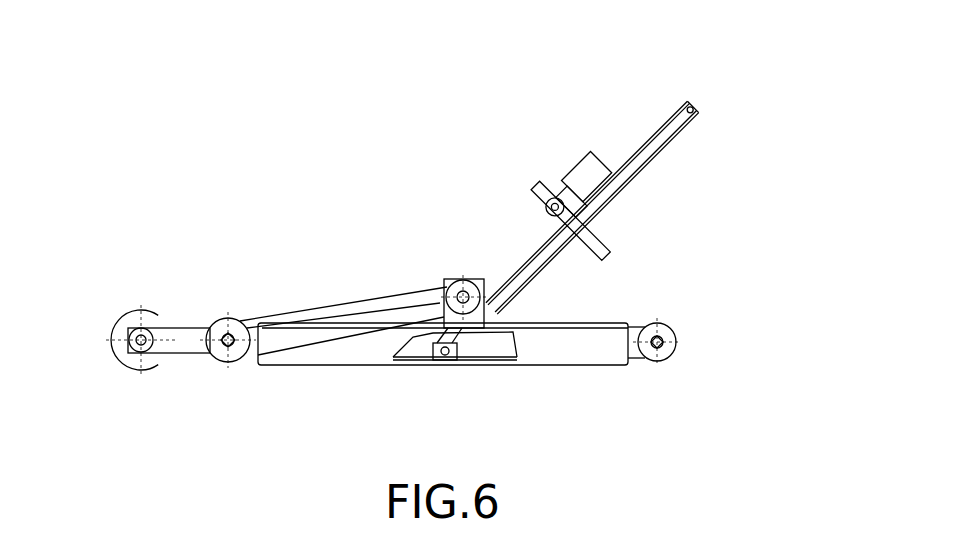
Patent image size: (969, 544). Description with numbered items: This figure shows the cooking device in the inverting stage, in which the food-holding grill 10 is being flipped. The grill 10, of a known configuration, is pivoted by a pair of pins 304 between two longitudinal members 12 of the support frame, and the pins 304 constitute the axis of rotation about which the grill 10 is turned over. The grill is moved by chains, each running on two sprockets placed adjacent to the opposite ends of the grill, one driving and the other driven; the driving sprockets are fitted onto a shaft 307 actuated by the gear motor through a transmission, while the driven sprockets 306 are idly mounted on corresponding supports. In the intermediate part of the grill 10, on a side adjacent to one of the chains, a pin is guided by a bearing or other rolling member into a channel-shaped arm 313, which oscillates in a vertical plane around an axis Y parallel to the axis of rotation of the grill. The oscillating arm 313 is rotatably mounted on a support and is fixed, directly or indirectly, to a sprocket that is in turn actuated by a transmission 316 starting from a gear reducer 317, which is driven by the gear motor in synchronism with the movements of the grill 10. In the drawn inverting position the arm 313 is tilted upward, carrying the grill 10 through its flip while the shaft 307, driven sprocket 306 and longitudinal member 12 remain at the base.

The food-holding grill 10 is at (683, 140).
The longitudinal member 12 is at (577, 350).
The pin 304 is at (428, 354).
The driven sprocket 306 is at (678, 338).
The shaft 307 is at (208, 354).
The channel-shaped arm 313 is at (580, 178).
The transmission 316 is at (365, 298).
The gear reducer 317 is at (123, 312).
The axis Y is at (462, 279).